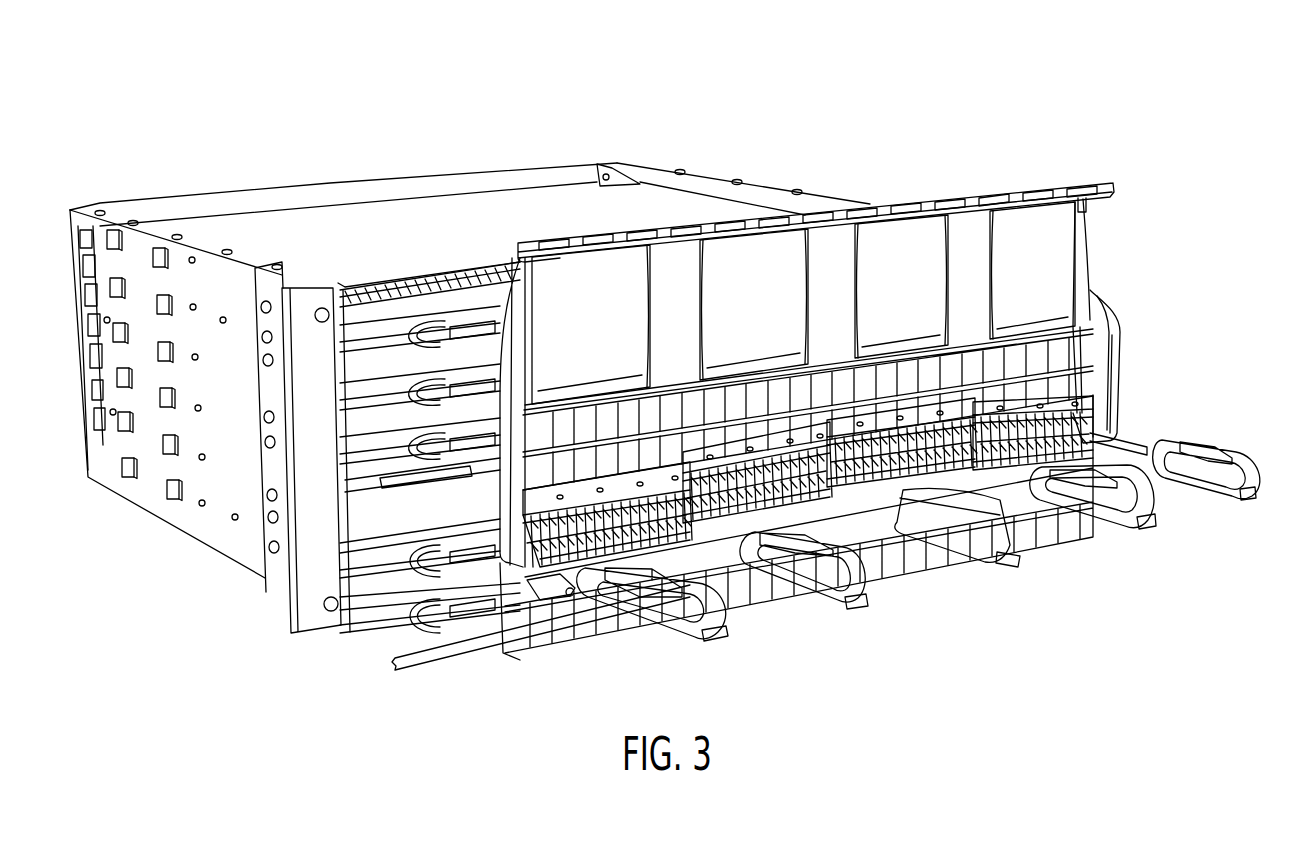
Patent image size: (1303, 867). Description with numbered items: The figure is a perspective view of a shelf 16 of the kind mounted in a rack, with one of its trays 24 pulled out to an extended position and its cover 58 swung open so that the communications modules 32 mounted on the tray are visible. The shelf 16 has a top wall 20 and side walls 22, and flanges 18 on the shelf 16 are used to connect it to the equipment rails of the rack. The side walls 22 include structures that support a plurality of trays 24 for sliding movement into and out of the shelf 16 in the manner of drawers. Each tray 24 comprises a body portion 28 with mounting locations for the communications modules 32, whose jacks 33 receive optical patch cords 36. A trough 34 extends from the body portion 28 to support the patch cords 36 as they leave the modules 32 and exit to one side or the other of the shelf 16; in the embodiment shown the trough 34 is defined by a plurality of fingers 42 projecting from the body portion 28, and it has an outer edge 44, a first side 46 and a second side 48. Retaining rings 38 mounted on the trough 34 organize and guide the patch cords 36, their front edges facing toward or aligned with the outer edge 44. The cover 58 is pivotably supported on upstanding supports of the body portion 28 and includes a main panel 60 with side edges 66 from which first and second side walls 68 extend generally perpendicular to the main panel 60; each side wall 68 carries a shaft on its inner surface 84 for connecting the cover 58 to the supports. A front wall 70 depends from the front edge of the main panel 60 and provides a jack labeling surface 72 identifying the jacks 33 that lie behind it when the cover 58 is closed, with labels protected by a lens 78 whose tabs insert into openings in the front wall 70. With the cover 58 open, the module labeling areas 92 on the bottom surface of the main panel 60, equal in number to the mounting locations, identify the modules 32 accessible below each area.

The shelf 16 is at (178, 127).
The flange 18 is at (307, 456).
The top wall 20 is at (357, 218).
The side wall 22 is at (147, 393).
The tray 24 is at (357, 334).
The body portion 28 is at (407, 511).
The communications module 32 is at (355, 318).
The jack 33 is at (598, 550).
The trough 34 is at (360, 472).
The patch cord 36 is at (415, 662).
The retaining ring 38 is at (665, 612).
The finger 42 is at (855, 603).
The outer edge 44 is at (1007, 560).
The first side 46 is at (573, 594).
The second side 48 is at (1133, 438).
The cover 58 is at (1087, 245).
The main panel 60 is at (970, 222).
The side edge 66 is at (1103, 314).
The side wall 68 is at (497, 552).
The front wall 70 is at (1080, 203).
The jack labeling surface 72 is at (813, 215).
The lens 78 is at (622, 232).
The inner surface 84 is at (1104, 386).
The module labeling area 92 is at (594, 327).